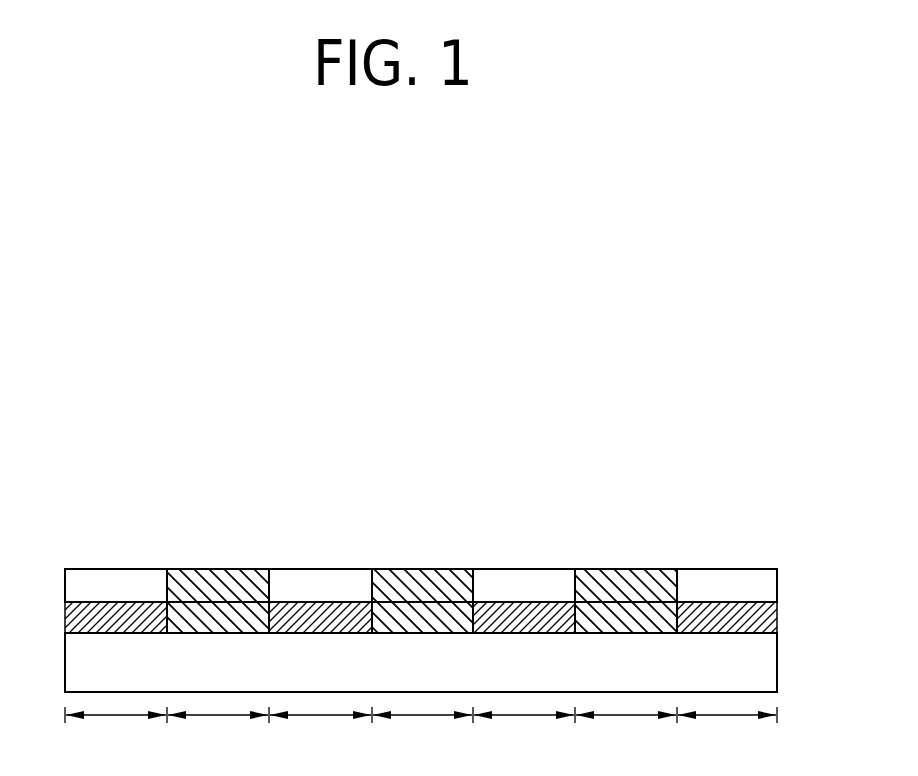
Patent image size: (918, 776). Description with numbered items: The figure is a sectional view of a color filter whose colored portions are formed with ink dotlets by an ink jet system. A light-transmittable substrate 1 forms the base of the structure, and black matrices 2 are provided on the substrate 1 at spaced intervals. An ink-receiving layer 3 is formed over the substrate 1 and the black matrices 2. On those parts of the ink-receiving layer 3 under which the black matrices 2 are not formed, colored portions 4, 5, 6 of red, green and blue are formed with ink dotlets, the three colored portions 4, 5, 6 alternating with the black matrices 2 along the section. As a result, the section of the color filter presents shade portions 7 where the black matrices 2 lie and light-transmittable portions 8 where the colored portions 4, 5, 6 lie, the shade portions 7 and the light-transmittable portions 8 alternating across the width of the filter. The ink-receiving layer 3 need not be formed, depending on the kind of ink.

The light-transmittable substrate 1 is at (770, 661).
The black matrices 2 is at (65, 617).
The ink-receiving layer 3 is at (770, 585).
The colored portion 4 is at (220, 571).
The colored portion 5 is at (425, 568).
The colored portion 6 is at (632, 569).
The shade portions 7 is at (421, 733).
The light-transmittable portions 8 is at (422, 735).